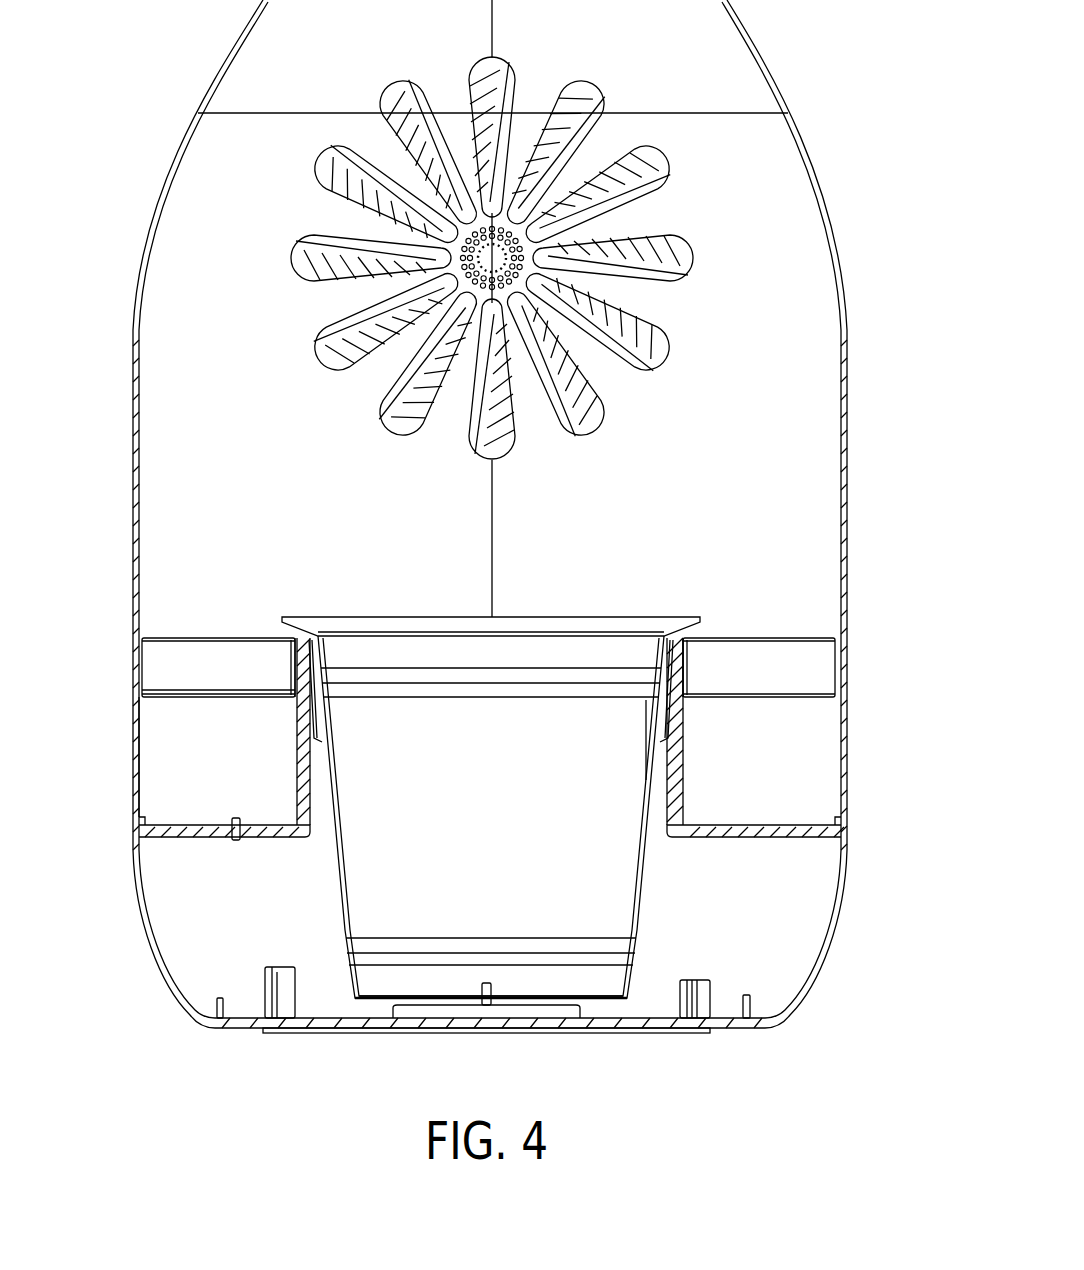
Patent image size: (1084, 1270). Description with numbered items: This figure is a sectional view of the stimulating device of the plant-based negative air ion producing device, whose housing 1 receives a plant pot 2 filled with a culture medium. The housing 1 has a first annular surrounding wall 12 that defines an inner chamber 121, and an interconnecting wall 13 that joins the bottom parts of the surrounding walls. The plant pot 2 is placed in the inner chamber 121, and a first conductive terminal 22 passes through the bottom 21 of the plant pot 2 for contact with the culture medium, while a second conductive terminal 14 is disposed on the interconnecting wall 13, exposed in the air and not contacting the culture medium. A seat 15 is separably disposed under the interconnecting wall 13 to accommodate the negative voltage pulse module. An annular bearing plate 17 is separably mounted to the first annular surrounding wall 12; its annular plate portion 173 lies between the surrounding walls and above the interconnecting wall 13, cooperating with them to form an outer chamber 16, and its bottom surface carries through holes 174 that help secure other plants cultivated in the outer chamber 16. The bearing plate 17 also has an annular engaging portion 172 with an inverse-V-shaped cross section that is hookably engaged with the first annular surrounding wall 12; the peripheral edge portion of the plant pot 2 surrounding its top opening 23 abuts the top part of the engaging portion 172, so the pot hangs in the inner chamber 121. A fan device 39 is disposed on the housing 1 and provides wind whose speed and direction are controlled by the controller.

The housing 1 is at (862, 398).
The plant pot 2 is at (295, 612).
The first annular surrounding wall 12 is at (303, 762).
The interconnecting wall 13 is at (207, 831).
The second conductive terminal 14 is at (236, 842).
The seat 15 is at (850, 886).
The outer chamber 16 is at (195, 800).
The annular bearing plate 17 is at (792, 620).
The cup bottom 21 is at (563, 998).
The first conductive terminal 22 is at (494, 990).
The top opening 23 is at (508, 655).
The fan device 39 is at (638, 82).
The inner chamber 121 is at (652, 778).
The annular engaging portion 172 is at (682, 665).
The annular plate portion 173 is at (212, 692).
The through holes 174 is at (172, 698).